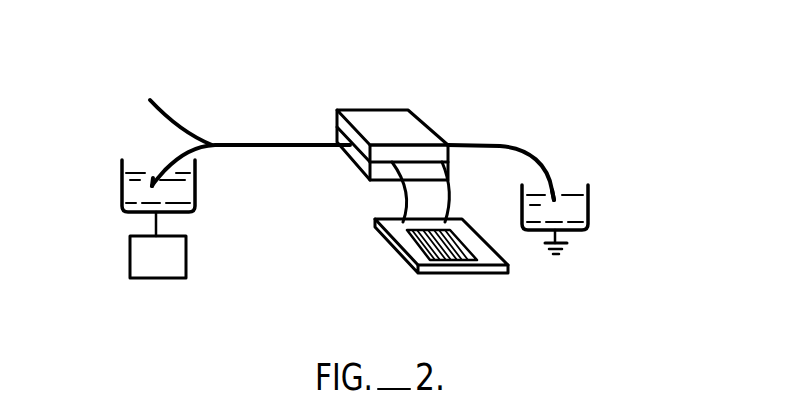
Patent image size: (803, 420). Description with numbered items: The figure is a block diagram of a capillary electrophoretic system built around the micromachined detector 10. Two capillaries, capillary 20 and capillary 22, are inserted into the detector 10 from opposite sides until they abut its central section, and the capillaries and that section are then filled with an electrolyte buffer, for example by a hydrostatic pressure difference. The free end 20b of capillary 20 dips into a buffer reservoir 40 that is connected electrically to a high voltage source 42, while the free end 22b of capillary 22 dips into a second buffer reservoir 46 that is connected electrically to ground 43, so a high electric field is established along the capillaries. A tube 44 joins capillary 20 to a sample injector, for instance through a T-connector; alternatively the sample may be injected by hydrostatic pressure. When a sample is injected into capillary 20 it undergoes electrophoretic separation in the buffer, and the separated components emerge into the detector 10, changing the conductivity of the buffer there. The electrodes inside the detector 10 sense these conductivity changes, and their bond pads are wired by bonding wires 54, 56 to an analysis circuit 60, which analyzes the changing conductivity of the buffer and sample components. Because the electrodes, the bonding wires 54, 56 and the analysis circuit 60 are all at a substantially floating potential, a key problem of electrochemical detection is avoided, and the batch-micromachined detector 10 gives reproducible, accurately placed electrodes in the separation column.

The detector 10 is at (378, 111).
The capillary 20 is at (283, 143).
The end of capillary 20b is at (152, 180).
The capillary 22 is at (513, 143).
The end of capillary 22b is at (553, 205).
The buffer reservoir 40 is at (185, 192).
The high voltage source 42 is at (187, 262).
The ground 43 is at (555, 256).
The tube 44 is at (158, 102).
The buffer reservoir 46 is at (565, 220).
The bonding wire 54 is at (400, 192).
The bonding wire 56 is at (448, 199).
The analysis circuit 60 is at (482, 275).